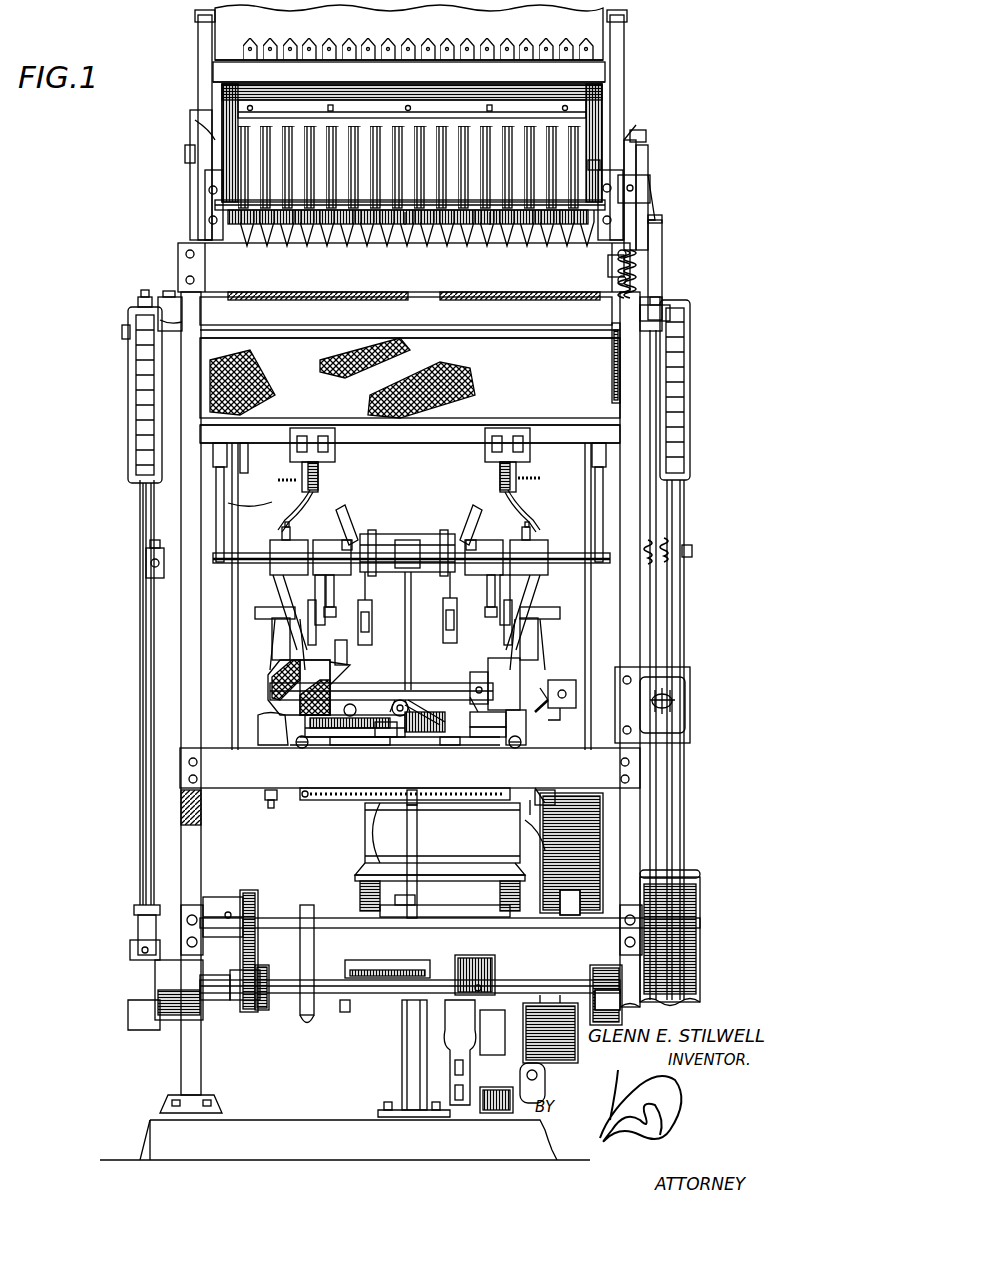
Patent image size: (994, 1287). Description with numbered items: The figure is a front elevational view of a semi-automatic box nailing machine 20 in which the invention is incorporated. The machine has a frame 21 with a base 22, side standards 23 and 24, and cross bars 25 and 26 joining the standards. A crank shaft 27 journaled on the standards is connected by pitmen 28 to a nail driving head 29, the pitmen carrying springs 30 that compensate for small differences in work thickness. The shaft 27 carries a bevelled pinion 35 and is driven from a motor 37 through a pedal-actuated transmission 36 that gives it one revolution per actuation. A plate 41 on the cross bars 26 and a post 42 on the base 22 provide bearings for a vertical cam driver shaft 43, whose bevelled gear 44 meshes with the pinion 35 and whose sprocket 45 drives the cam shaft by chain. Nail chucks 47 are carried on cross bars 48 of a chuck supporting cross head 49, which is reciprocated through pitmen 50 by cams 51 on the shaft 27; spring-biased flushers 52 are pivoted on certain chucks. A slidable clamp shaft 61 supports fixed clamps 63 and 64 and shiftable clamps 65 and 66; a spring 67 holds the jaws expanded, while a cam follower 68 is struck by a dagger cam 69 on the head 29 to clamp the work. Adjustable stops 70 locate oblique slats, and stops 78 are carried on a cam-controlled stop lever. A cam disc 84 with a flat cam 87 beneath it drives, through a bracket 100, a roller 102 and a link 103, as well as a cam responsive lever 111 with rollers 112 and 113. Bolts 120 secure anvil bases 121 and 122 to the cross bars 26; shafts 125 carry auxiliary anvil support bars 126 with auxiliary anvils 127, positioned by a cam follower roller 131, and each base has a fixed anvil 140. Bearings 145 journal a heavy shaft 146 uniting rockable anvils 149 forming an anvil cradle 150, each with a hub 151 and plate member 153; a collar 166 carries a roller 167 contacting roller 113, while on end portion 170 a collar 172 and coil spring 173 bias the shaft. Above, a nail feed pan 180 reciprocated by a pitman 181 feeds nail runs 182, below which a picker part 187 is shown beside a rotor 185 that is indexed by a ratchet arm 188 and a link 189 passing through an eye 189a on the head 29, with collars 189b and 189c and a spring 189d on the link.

The nailing machine 20 is at (685, 82).
The frame 21 is at (170, 1059).
The base 22 is at (150, 1140).
The side standard 23 is at (181, 1025).
The side standard 24 is at (632, 634).
The cross bar 25 is at (178, 262).
The cross bar 26 is at (180, 766).
The crank shaft 27 is at (282, 1002).
The pitman 28 is at (684, 810).
The nail driving head 29 is at (175, 298).
The spring 30 is at (128, 385).
The bevelled pinion 35 is at (475, 970).
The pedal-actuated transmission 36 is at (488, 1080).
The motor 37 is at (380, 834).
The plate 41 is at (315, 745).
The post 42 is at (402, 1030).
The cam driver shaft 43 is at (417, 885).
The bevelled gear 44 is at (352, 962).
The sprocket 45 is at (422, 810).
The nail chuck 47 is at (318, 482).
The cross bar 48 is at (328, 456).
The chuck supporting cross head 49 is at (243, 445).
The pitman 50 is at (215, 645).
The cam 51 is at (258, 954).
The flusher 52 is at (280, 520).
The clamp shaft 61 is at (575, 553).
The fixed clamp 63 is at (290, 582).
The fixed clamp 64 is at (487, 596).
The shiftable clamp 65 is at (336, 596).
The shiftable clamp 66 is at (528, 600).
The spring 67 is at (660, 545).
The cam follower 68 is at (150, 560).
The dagger cam 69 is at (175, 492).
The stop 70 is at (348, 520).
The stop 78 is at (372, 595).
The cam disc 84 is at (330, 737).
The flat cam 87 is at (355, 745).
The bracket 100 is at (432, 728).
The cam following roller 102 is at (410, 705).
The link 103 is at (412, 632).
The cam responsive lever 111 is at (456, 745).
The cam following roller 112 is at (373, 740).
The roller 113 is at (488, 737).
The bolt 120 is at (268, 808).
The anvil base 121 is at (556, 745).
The anvil base 122 is at (262, 730).
The shaft 125 is at (296, 742).
The auxiliary anvil support bar 126 is at (278, 625).
The auxiliary anvil 127 is at (273, 615).
The cam follower roller 131 is at (350, 704).
The fixed anvil 140 is at (270, 606).
The bearing 145 is at (280, 678).
The shaft 146 is at (362, 683).
The rockable anvil 149 is at (316, 620).
The anvil cradle 150 is at (345, 660).
The hub 151 is at (325, 670).
The plate member 153 is at (410, 686).
The collar 166 is at (480, 672).
The roller 167 is at (480, 745).
The end portion 170 is at (570, 680).
The collar 172 is at (563, 712).
The coil spring 173 is at (540, 715).
The nail feed pan 180 is at (526, 35).
The pitman 181 is at (660, 270).
The nail run 182 is at (300, 135).
The rotor 185 is at (490, 220).
The comb 187 is at (413, 224).
The ratchet arm 188 is at (636, 142).
The link 189 is at (645, 190).
The eye 189a is at (670, 312).
The collar 189b is at (606, 262).
The collar 189c is at (613, 352).
The spring 189d is at (640, 280).